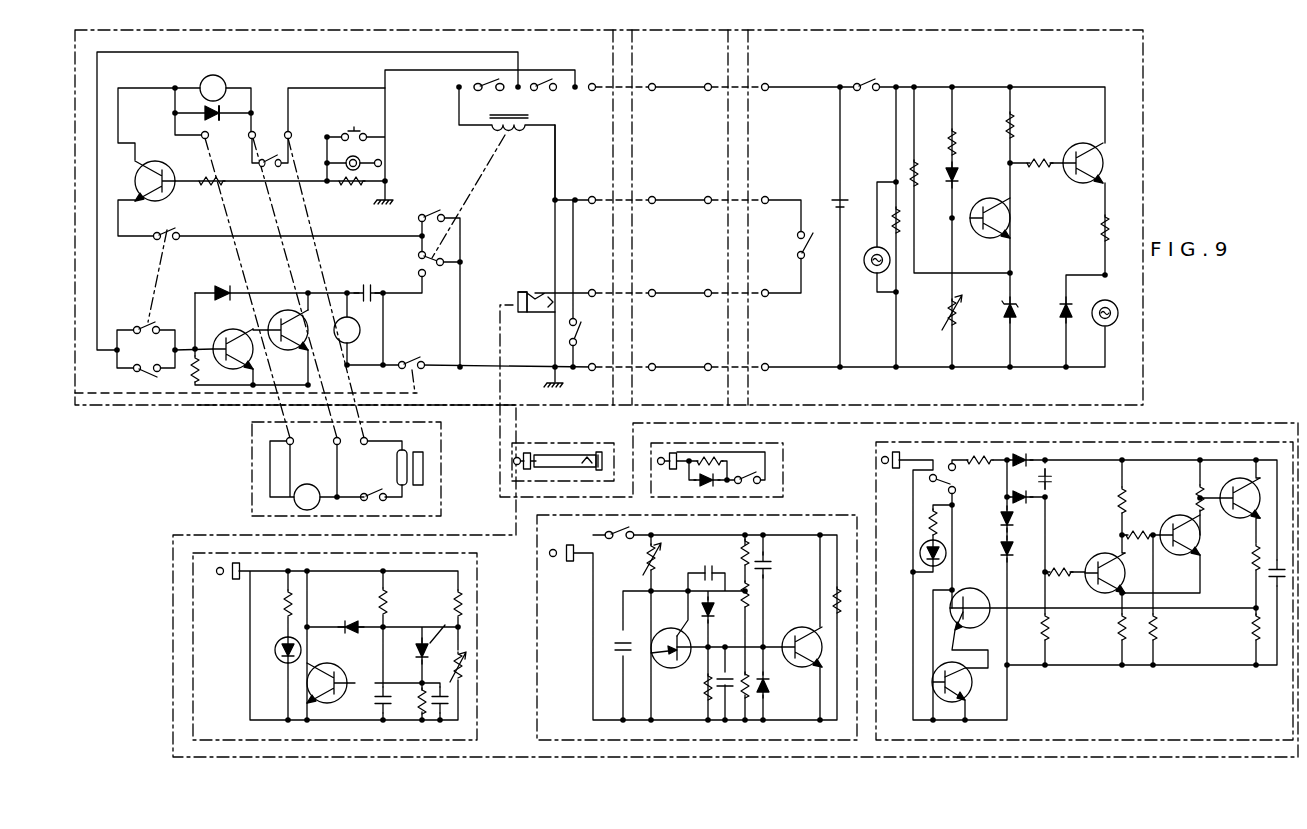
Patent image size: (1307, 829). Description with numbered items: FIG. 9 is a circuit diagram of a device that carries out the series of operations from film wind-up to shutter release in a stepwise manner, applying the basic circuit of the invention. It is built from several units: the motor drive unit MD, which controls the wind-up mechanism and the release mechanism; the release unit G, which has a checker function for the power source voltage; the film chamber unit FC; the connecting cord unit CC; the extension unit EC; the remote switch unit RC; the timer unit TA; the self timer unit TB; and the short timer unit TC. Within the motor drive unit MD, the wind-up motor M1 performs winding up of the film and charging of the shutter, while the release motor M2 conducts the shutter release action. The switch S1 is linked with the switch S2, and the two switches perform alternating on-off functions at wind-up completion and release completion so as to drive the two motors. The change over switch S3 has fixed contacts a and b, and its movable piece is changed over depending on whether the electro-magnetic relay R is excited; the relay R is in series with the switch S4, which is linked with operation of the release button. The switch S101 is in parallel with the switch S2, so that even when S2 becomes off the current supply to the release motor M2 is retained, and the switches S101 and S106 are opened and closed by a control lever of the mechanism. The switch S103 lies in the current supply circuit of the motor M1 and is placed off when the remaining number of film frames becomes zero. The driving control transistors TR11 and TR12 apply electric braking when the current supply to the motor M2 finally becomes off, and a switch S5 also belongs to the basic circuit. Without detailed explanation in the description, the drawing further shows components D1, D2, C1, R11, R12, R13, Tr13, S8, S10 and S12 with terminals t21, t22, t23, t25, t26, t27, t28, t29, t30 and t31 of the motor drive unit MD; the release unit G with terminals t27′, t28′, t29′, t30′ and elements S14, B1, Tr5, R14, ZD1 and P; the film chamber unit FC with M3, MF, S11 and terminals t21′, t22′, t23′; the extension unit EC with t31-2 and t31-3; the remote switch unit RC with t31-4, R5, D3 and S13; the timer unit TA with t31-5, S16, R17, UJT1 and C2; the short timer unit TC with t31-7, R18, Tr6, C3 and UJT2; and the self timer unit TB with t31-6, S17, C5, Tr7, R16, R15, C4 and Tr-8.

The motor drive unit MD is at (75, 94).
The wind-up motor M1 is at (200, 86).
The diode D2 is at (193, 114).
The terminal t21 is at (196, 149).
The terminal t22 is at (236, 145).
The terminal t23 is at (286, 129).
The terminal t25 is at (395, 120).
The terminal t26 is at (399, 154).
The transistor Tr13 is at (142, 170).
The resistor R12 is at (232, 194).
The switch S10 is at (280, 170).
The resistor R13 is at (352, 194).
The switch S1 is at (169, 224).
The switch S5 is at (432, 205).
The fixed contact a is at (405, 246).
The fixed contact b is at (412, 274).
The change over switch S3 is at (438, 276).
The switch S2 is at (138, 316).
The switch S101 is at (140, 370).
The resistor R11 is at (190, 384).
The diode D1 is at (221, 281).
The driving control transistor TR11 is at (227, 341).
The driving control transistor TR12 is at (305, 311).
The capacitor C1 is at (371, 280).
The release motor M2 is at (360, 330).
The switch S106 is at (422, 352).
The switch S103 is at (497, 99).
The switch S8 is at (547, 99).
The electro-magnetic relay R is at (520, 150).
The terminal t27 is at (596, 75).
The terminal t28 is at (593, 189).
The terminal t29 is at (593, 282).
The terminal t30 is at (593, 357).
The terminal t31 is at (524, 280).
The switch S12 is at (402, 491).
The connecting cord unit CC is at (665, 32).
The release unit G is at (1143, 76).
The terminal t27′ is at (776, 75).
The terminal t28′ is at (774, 188).
The terminal t29′ is at (772, 282).
The terminal t30′ is at (772, 356).
The switch S14 is at (867, 75).
The battery B1 is at (823, 185).
The switch S4 is at (815, 255).
The transistor Tr5 is at (936, 395).
The variable resistor R14 is at (971, 315).
The zener diode ZD1 is at (1028, 326).
The pilot lamp P is at (1113, 310).
The film chamber unit FC is at (252, 472).
The motor M3 is at (294, 497).
The terminal t21′ is at (292, 454).
The terminal t22′ is at (321, 463).
The terminal t23′ is at (367, 454).
The magnet MF is at (415, 456).
The switch S11 is at (385, 500).
The extension unit EC is at (531, 431).
The terminal t31-2 is at (510, 461).
The terminal t31-3 is at (585, 455).
The remote switch unit RC is at (783, 449).
The terminal t31-4 is at (672, 452).
The resistor R5 is at (708, 452).
The diode D3 is at (698, 482).
The switch S13 is at (757, 479).
The timer unit TA is at (840, 515).
The terminal t31-5 is at (554, 560).
The switch S16 is at (621, 548).
The variable resistor R17 is at (672, 559).
The unijunction transistor UJT1 is at (690, 620).
The capacitor C2 is at (614, 647).
The short timer unit TC is at (172, 683).
The terminal t31-7 is at (222, 580).
The resistor R18 is at (404, 602).
The transistor Tr6 is at (327, 672).
The capacitor C3 is at (358, 706).
The unijunction transistor UJT2 is at (435, 650).
The self timer unit TB is at (1200, 423).
The terminal t31-6 is at (895, 452).
The switch S17 is at (936, 474).
The capacitor C5 is at (1061, 483).
The transistor Tr7 is at (1217, 510).
The resistor R16 is at (1066, 634).
The resistor R15 is at (1234, 634).
The capacitor C4 is at (1268, 574).
The transistor Tr-8 is at (965, 700).